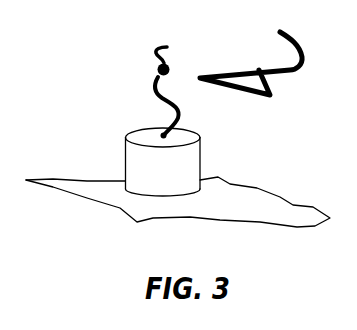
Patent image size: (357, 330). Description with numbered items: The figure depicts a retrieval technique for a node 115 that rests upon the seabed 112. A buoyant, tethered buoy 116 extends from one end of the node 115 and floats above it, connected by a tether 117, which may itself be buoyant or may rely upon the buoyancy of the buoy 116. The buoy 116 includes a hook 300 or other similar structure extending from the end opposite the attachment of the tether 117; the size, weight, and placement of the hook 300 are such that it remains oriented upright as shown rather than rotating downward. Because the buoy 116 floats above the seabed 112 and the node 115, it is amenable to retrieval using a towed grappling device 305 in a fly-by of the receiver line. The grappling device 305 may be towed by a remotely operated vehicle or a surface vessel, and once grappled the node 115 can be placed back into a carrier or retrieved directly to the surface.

The hook 300 is at (155, 48).
The buoy 116 is at (157, 68).
The tether 117 is at (172, 110).
The node 115 is at (203, 152).
The seabed 112 is at (242, 214).
The grappling device 305 is at (273, 98).